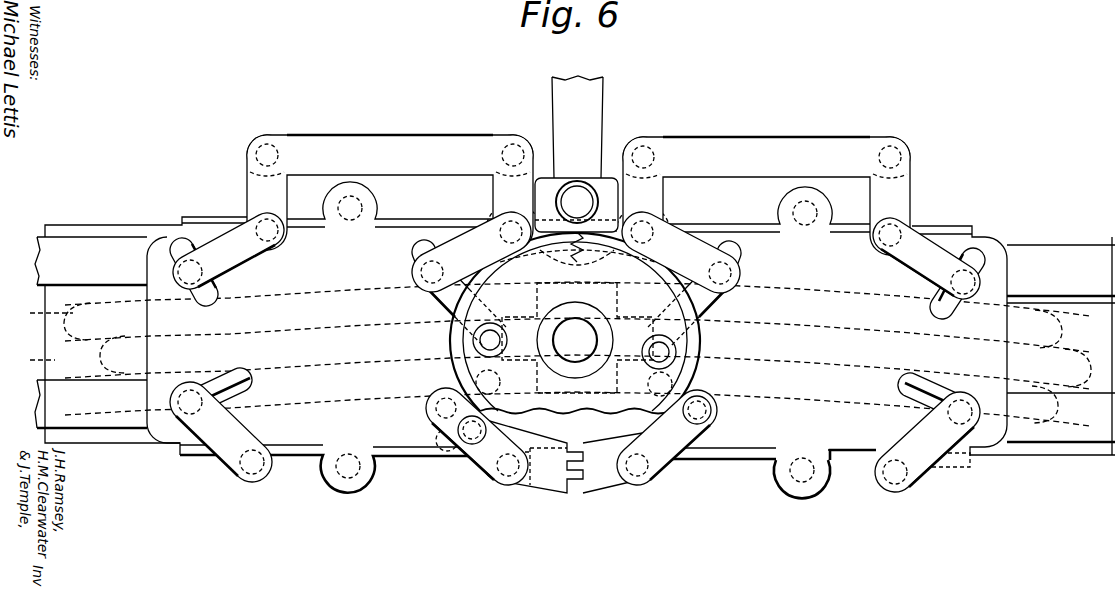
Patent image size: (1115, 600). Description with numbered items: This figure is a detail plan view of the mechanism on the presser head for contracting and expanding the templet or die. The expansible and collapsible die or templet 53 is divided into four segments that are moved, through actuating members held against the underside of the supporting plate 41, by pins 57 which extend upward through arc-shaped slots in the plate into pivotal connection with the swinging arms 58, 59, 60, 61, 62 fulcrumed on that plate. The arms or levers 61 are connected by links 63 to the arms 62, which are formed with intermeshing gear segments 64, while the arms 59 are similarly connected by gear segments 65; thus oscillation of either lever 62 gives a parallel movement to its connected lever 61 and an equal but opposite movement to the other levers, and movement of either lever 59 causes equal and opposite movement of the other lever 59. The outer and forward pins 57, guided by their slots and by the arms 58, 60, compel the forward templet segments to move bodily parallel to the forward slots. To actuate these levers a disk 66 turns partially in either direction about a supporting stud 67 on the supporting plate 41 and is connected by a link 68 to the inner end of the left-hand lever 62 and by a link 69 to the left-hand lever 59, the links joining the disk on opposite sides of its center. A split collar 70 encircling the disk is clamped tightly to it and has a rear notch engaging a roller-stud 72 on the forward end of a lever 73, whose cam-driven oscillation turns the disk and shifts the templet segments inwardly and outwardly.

The supporting plate 41 is at (858, 458).
The expansible and collapsible die or templet 53 is at (62, 312).
The pins 57 is at (174, 272).
The swinging arm 58 is at (232, 470).
The swinging arm or lever 59 is at (480, 482).
The swinging arm 60 is at (917, 468).
The arm or lever 61 is at (213, 243).
The arm or lever 62 is at (468, 244).
The links 63 is at (386, 143).
The intermeshing gear segments 64 is at (607, 252).
The gear segments 65 is at (584, 498).
The disk 66 is at (683, 350).
The supporting stud 67 is at (575, 323).
The link 68 is at (448, 300).
The link 69 is at (602, 430).
The split collar 70 is at (472, 341).
The roller-stud 72 is at (576, 190).
The lever 73 is at (598, 106).